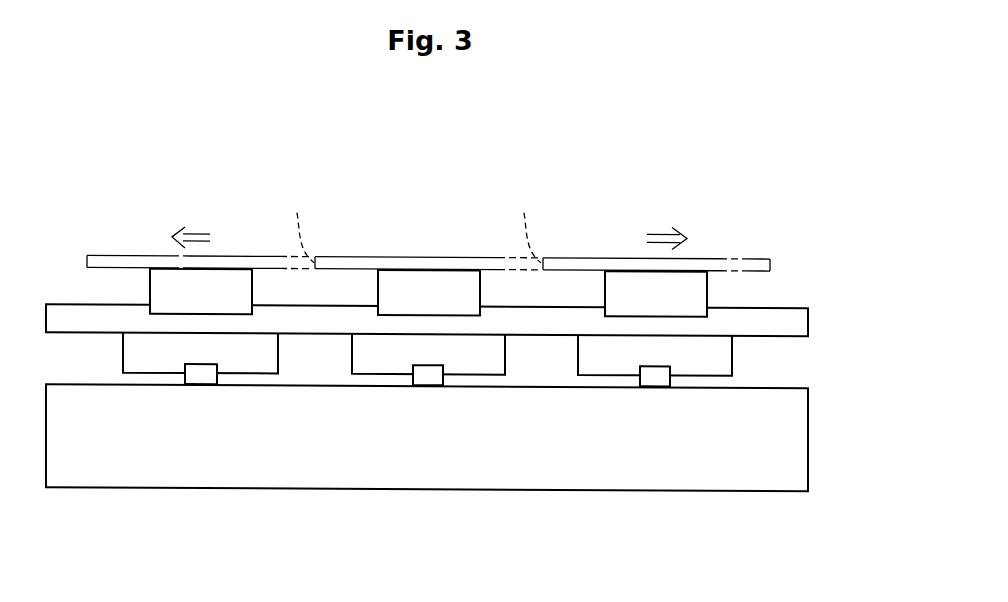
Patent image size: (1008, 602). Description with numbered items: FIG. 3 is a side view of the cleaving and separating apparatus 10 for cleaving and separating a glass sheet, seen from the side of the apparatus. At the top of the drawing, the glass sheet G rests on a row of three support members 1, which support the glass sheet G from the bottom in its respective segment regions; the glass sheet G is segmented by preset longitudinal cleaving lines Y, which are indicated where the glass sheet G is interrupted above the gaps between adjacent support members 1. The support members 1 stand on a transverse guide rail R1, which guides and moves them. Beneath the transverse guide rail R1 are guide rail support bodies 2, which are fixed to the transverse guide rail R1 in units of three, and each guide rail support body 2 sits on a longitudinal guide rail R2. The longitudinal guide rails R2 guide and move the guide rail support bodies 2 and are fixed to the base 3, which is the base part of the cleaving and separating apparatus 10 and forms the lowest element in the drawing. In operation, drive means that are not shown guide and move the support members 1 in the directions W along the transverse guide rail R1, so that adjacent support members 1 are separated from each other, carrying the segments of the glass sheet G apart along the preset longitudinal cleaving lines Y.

The cleaving and separating apparatus 10 is at (765, 210).
The support member 1 is at (150, 286).
The guide rail support body 2 is at (123, 352).
The base 3 is at (810, 436).
The transverse guide rail R1 is at (810, 316).
The longitudinal guide rail R2 is at (185, 378).
The glass sheet G is at (124, 253).
The preset longitudinal cleaving line Y is at (413, 224).
The direction W is at (429, 238).